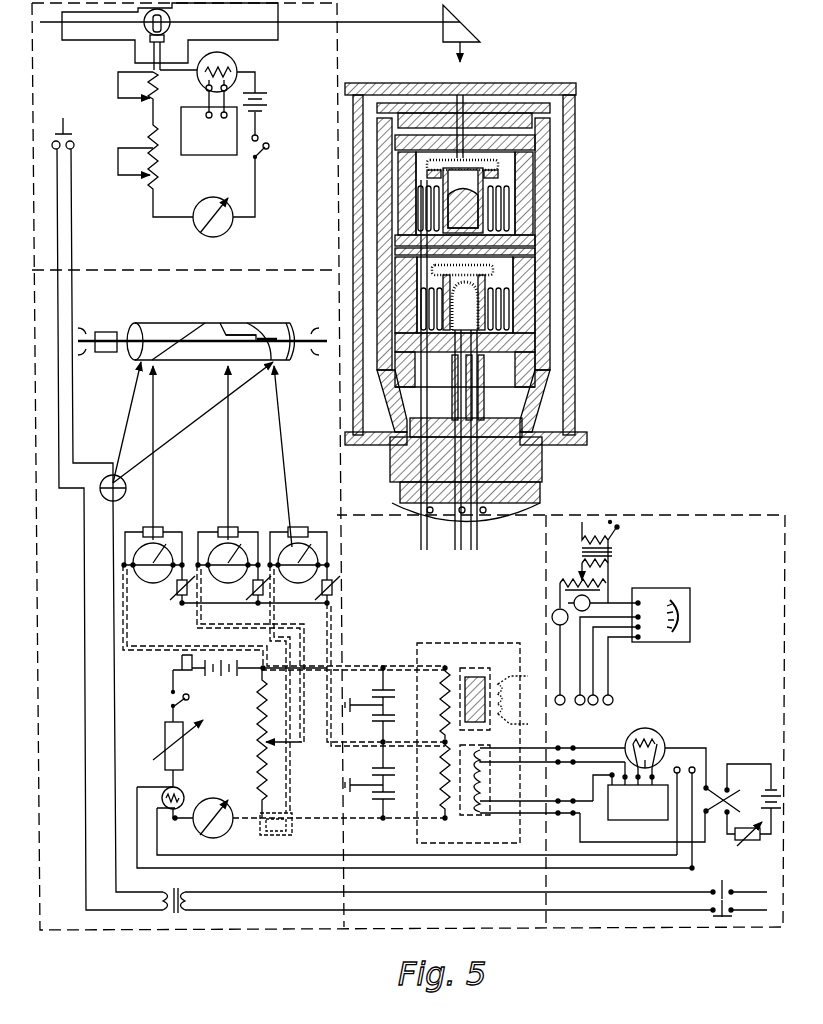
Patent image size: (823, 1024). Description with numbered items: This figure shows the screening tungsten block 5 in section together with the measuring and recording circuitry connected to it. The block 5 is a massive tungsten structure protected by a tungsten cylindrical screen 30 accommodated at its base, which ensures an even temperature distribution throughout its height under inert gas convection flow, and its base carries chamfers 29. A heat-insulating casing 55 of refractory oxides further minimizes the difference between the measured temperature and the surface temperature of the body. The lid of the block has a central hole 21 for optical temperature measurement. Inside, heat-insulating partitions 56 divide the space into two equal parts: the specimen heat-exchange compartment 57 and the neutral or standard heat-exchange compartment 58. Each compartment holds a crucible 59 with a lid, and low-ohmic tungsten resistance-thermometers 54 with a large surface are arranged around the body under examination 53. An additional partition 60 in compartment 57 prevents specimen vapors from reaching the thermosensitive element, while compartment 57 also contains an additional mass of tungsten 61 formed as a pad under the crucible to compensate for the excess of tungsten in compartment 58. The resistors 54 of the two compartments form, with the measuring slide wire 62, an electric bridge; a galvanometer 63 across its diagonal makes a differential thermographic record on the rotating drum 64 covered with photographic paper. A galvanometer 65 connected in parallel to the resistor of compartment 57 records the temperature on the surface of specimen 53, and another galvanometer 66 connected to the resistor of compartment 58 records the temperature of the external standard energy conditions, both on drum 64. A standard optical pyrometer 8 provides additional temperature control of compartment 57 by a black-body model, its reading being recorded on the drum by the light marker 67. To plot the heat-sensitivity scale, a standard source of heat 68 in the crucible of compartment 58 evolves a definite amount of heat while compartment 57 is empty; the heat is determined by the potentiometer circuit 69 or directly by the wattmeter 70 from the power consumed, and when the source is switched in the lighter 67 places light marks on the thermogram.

The screening tungsten block 5 is at (543, 213).
The standard optical pyrometer 8 is at (268, 32).
The central hole 21 is at (463, 120).
The chamfers 29 is at (537, 413).
The tungsten cylindrical screen 30 is at (567, 158).
The body under examination 53 is at (465, 212).
The low-ohmic tungsten resistance-thermometers 54 is at (302, 334).
The heat-insulating casing 55 is at (523, 273).
The heat-insulating partitions 56 is at (527, 142).
The specimen heat-exchange compartment 57 is at (447, 157).
The neutral heat-exchange compartment 58 is at (470, 310).
The crucibles 59 is at (490, 167).
The additional partition 60 is at (418, 133).
The additional mass of tungsten 61 is at (485, 242).
The measuring slide wire 62 is at (267, 713).
The galvanometer 63 is at (237, 537).
The rotating drum 64 is at (168, 332).
The galvanometer 65 is at (165, 537).
The galvanometer 66 is at (300, 537).
The light marker 67 is at (110, 476).
The standard source of heat 68 is at (520, 343).
The potentiometer circuit 69 is at (650, 797).
The wattmeter 70 is at (653, 598).